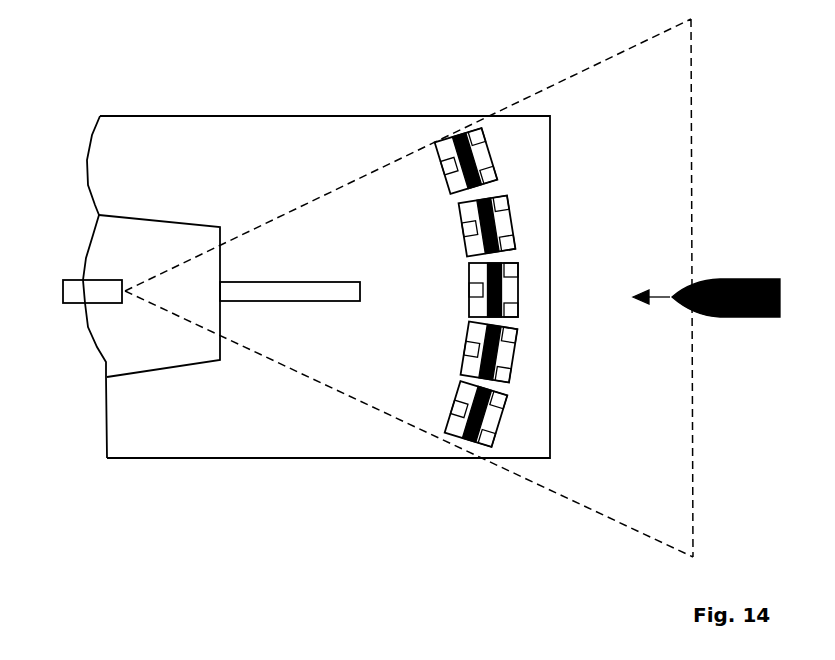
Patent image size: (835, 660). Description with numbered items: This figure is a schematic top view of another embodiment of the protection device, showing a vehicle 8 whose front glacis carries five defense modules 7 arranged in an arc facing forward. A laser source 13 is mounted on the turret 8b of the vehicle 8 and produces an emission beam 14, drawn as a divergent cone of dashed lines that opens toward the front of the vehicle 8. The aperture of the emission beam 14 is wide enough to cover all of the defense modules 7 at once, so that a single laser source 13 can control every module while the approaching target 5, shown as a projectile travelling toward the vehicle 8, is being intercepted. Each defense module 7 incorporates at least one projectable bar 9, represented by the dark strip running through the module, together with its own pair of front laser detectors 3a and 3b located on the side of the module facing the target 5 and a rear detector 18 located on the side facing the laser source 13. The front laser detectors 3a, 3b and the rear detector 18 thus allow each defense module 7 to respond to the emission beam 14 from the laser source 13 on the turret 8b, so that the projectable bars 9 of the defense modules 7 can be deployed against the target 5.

The front laser detector 3a is at (513, 312).
The front laser detector 3b is at (517, 270).
The target 5 is at (745, 297).
The defense module 7 is at (437, 198).
The vehicle 8 is at (272, 427).
The turret 8b is at (137, 345).
The projectable bar 9 is at (457, 133).
The laser source 13 is at (88, 292).
The emission beam 14 is at (314, 181).
The rear detector 18 is at (481, 289).